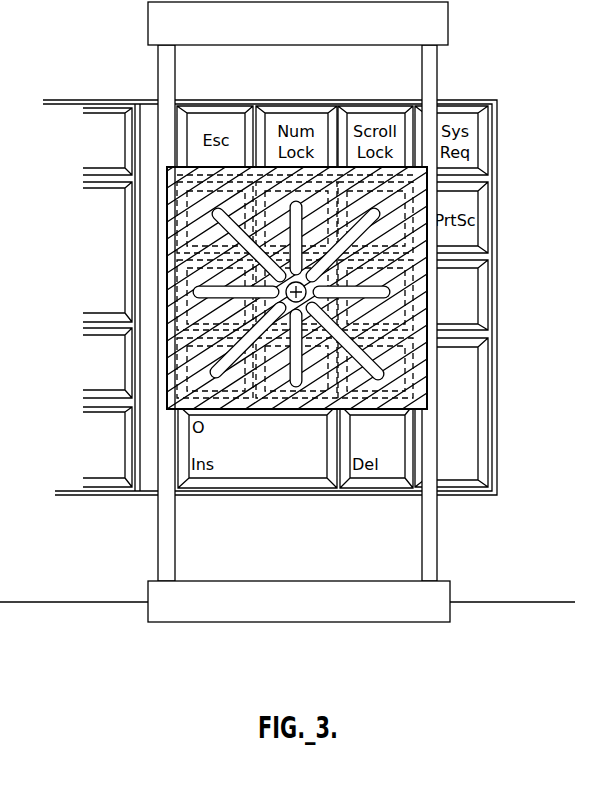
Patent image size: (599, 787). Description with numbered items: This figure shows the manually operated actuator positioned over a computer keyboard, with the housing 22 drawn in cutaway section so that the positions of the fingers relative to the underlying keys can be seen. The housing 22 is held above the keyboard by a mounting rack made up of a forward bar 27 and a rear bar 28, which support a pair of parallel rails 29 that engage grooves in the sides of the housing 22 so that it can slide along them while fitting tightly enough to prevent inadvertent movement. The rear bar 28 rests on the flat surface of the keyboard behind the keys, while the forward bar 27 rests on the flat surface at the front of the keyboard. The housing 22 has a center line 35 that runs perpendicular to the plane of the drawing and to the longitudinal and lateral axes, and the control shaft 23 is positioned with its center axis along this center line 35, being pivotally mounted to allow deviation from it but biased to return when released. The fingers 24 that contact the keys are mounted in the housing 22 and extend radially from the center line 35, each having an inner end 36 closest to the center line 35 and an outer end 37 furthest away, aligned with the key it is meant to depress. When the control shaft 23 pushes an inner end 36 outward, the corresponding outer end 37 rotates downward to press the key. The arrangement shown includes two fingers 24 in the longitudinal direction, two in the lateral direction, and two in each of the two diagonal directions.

The housing 22 is at (427, 233).
The control shaft 23 is at (289, 286).
The fingers 24 is at (322, 352).
The forward bar 27 is at (450, 590).
The rear bar 28 is at (448, 27).
The rails 29 is at (437, 78).
The center line 35 is at (386, 277).
The inner end 36 is at (336, 316).
The outer end 37 is at (384, 380).